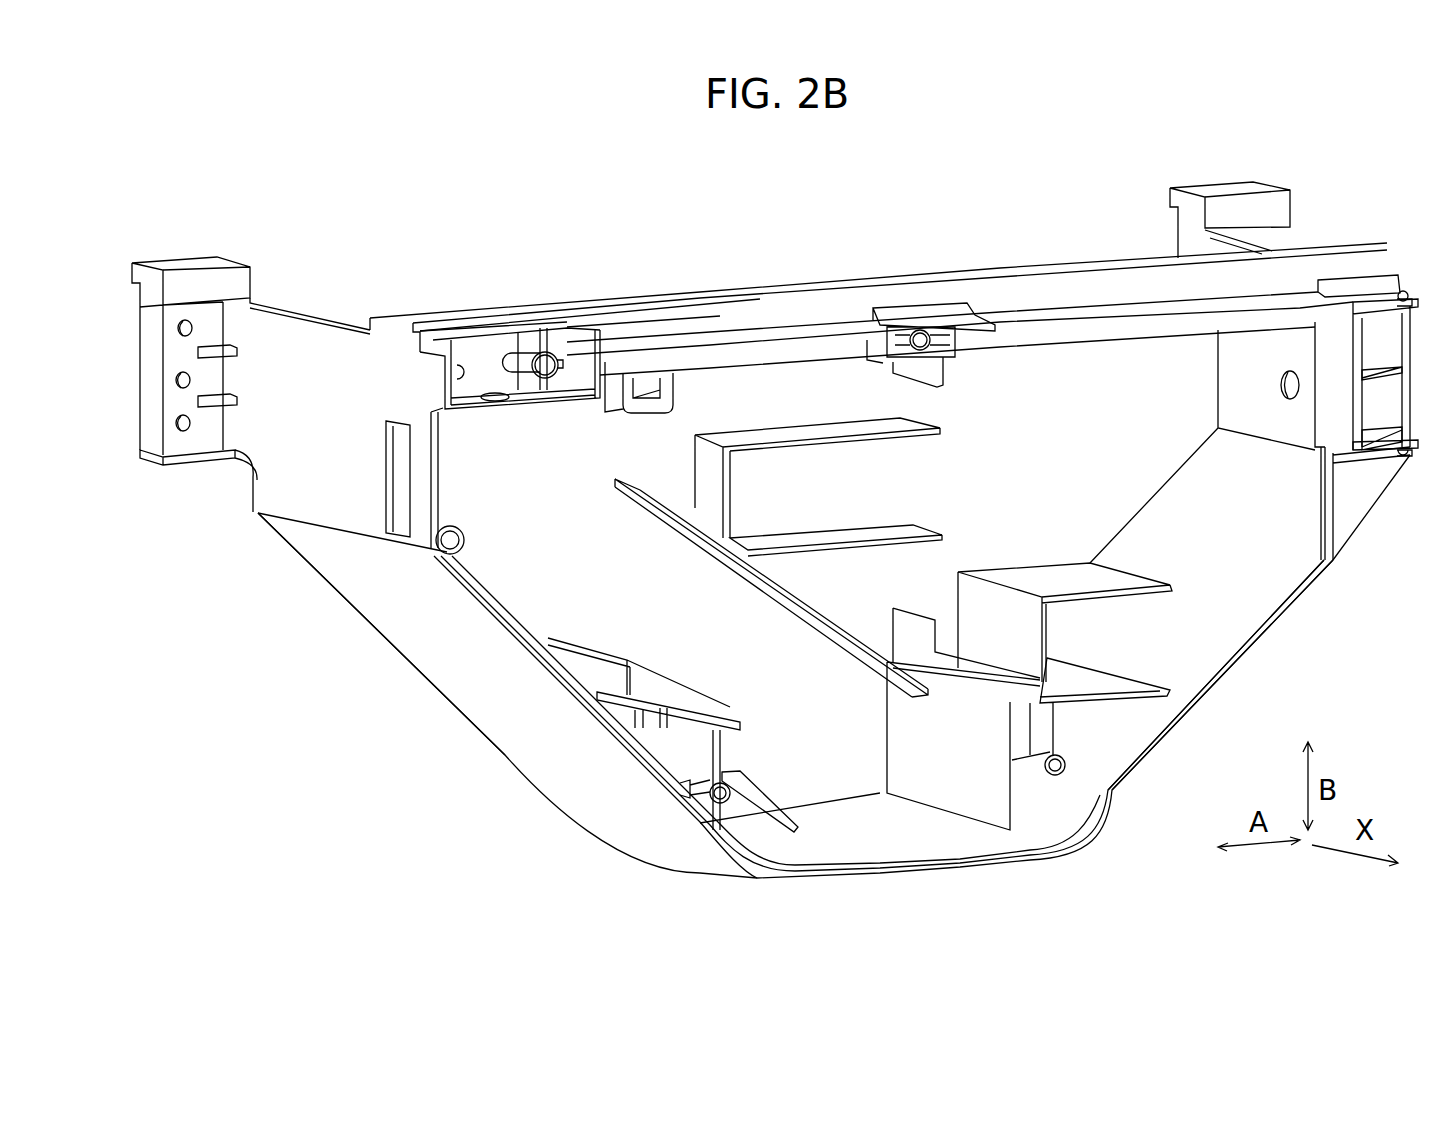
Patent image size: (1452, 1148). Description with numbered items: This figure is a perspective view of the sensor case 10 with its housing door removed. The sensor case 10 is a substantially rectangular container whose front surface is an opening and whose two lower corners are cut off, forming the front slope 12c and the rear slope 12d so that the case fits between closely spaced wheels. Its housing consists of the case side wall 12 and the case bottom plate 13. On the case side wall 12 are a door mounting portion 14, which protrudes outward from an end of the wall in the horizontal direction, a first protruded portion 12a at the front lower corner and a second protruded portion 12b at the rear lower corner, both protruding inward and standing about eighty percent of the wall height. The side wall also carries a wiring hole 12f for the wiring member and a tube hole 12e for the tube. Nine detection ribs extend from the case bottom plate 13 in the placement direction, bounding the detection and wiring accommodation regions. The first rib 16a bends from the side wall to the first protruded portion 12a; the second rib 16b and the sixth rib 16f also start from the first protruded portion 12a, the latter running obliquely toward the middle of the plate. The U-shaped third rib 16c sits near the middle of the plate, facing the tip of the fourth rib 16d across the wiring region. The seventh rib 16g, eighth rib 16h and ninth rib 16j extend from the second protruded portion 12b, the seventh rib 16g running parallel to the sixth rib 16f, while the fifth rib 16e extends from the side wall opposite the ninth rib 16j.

The sensor case 10 is at (428, 194).
The case side wall 12 is at (965, 325).
The case bottom plate 13 is at (1075, 357).
The door mounting portion 14 is at (1408, 293).
The first protruded portion 12a is at (953, 785).
The second protruded portion 12b is at (673, 737).
The front slope 12c is at (1241, 613).
The rear slope 12d is at (463, 688).
The tube hole 12e is at (1275, 385).
The wiring hole 12f is at (497, 393).
The first rib 16a is at (990, 597).
The second rib 16b is at (910, 627).
The third rib 16c is at (730, 486).
The fourth rib 16d is at (947, 370).
The fifth rib 16e is at (677, 392).
The sixth rib 16f is at (685, 525).
The seventh rib 16g is at (760, 803).
The eighth rib 16h is at (628, 717).
The ninth rib 16j is at (657, 682).